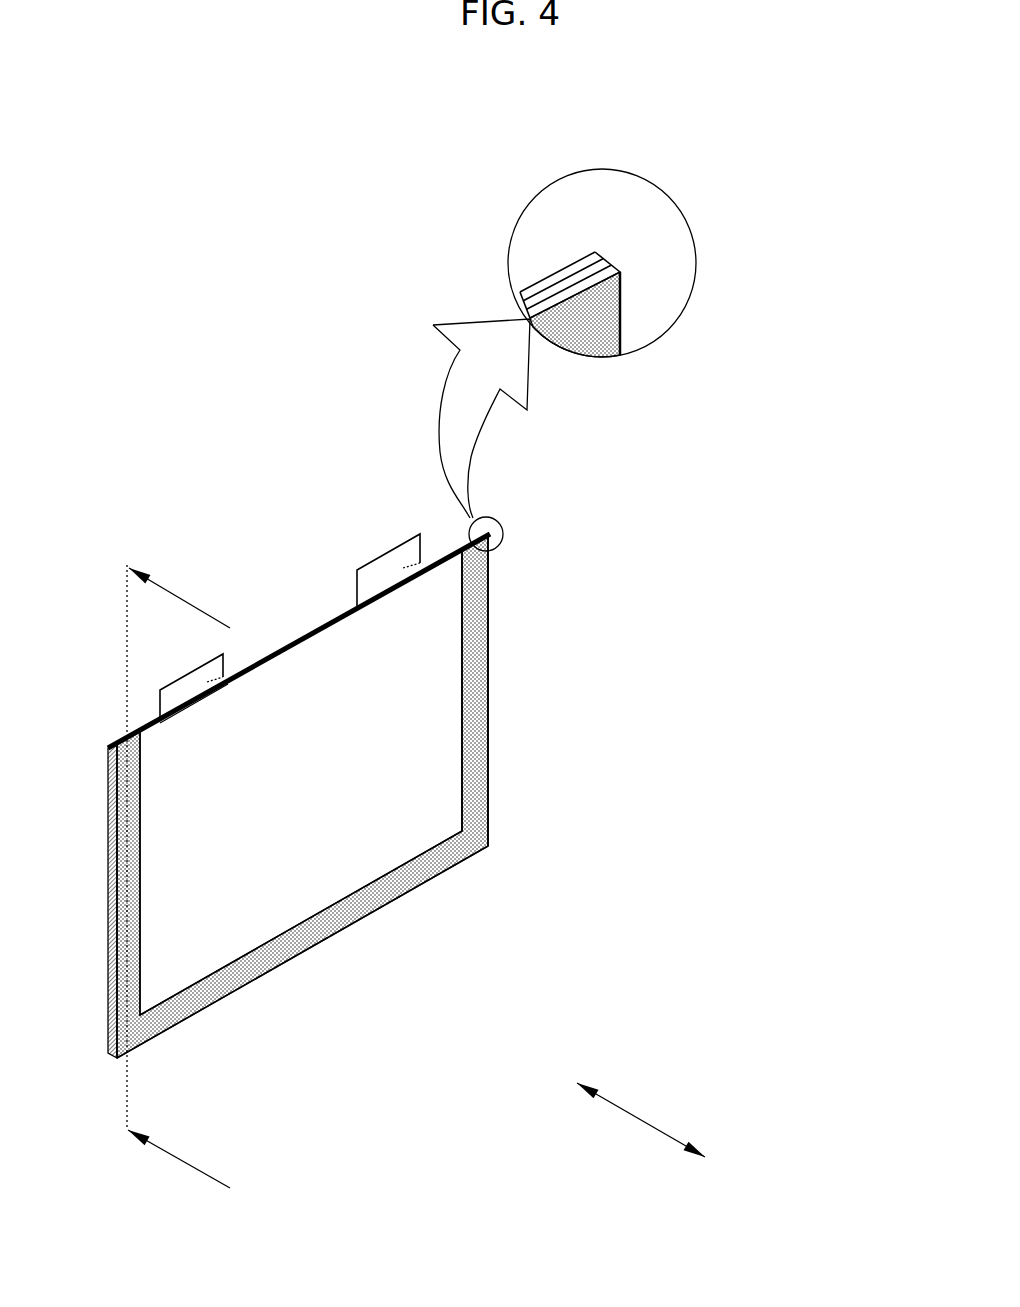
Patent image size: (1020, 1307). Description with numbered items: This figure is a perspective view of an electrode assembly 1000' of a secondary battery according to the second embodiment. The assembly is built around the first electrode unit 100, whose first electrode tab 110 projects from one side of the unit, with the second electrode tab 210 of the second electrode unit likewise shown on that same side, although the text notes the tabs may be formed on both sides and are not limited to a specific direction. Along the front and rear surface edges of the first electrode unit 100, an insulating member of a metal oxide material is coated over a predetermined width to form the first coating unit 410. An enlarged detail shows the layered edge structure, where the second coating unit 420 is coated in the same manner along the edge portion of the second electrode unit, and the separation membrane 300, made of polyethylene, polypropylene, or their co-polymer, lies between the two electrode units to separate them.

The electrode assembly 1000' is at (436, 690).
The first electrode unit 100 is at (413, 823).
The first electrode tab 110 is at (222, 676).
The second electrode tab 210 is at (447, 560).
The first coating unit 410 is at (477, 732).
The second coating unit 420 is at (588, 252).
The separation membrane 300 is at (608, 258).